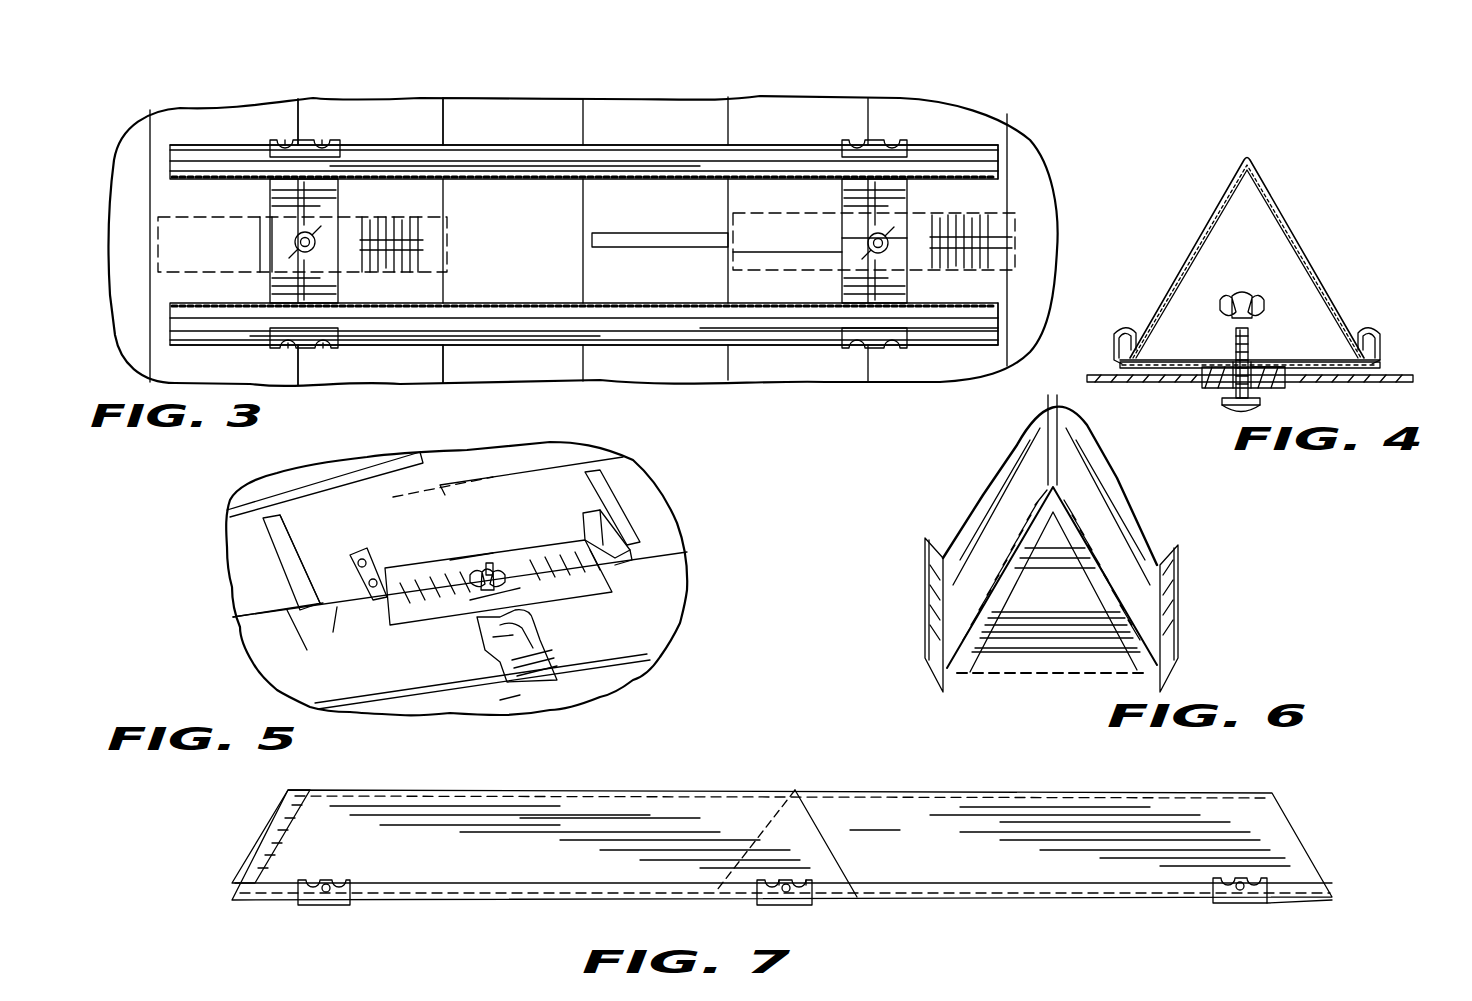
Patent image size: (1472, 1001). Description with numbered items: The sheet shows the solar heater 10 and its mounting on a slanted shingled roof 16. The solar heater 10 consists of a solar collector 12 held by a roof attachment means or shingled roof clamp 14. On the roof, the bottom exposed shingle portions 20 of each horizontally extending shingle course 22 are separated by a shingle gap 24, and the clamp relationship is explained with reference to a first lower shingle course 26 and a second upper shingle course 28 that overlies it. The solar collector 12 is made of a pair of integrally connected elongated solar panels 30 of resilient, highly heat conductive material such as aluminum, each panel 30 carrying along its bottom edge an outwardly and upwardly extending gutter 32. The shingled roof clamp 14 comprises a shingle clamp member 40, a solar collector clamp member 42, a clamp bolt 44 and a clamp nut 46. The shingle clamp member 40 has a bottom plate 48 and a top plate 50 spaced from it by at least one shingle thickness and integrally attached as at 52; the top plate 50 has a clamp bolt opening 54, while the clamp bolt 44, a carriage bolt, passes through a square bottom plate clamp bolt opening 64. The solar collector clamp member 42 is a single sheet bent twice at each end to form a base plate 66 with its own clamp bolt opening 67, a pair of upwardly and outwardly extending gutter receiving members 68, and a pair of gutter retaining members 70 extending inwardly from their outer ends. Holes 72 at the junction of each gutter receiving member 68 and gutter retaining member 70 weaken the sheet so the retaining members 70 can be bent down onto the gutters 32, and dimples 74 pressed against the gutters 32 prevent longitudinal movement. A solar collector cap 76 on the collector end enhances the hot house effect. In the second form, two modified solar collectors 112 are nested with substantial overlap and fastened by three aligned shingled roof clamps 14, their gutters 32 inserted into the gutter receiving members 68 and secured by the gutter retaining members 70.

In FIG. 3, the solar heater 10 is at (702, 392).
In FIG. 3, the solar collector 12 is at (1008, 314).
In FIG. 6, the solar collector 12 is at (1025, 492).
In FIG. 3, the shingled roof clamp 14 is at (268, 142).
In FIG. 4, the shingled roof clamp 14 is at (1385, 343).
In FIG. 5, the shingled roof clamp 14 is at (612, 590).
In FIG. 3, the shingled roof 16 is at (545, 370).
In FIG. 5, the shingled roof 16 is at (243, 492).
In FIG. 3, the bottom exposed shingle portions 20 is at (650, 372).
In FIG. 5, the bottom exposed shingle portions 20 is at (335, 608).
In FIG. 3, the shingle course 22 is at (460, 360).
In FIG. 5, the shingle course 22 is at (225, 545).
In FIG. 3, the shingle gap 24 is at (617, 242).
In FIG. 5, the shingle gap 24 is at (415, 466).
In FIG. 3, the first lower shingle course 26 is at (420, 134).
In FIG. 4, the first lower shingle course 26 is at (1320, 384).
In FIG. 5, the first lower shingle course 26 is at (238, 650).
In FIG. 3, the second upper shingle course 28 is at (288, 125).
In FIG. 5, the second upper shingle course 28 is at (228, 603).
In FIG. 3, the solar panel 30 is at (990, 168).
In FIG. 4, the solar panel 30 is at (1220, 200).
In FIG. 6, the solar panel 30 is at (985, 518).
In FIG. 7, the solar panel 30 is at (698, 790).
In FIG. 3, the gutter 32 is at (970, 146).
In FIG. 4, the gutter 32 is at (1140, 345).
In FIG. 6, the gutter 32 is at (925, 598).
In FIG. 7, the gutter 32 is at (560, 890).
In FIG. 3, the shingle clamp member 40 is at (447, 225).
In FIG. 5, the shingle clamp member 40 is at (572, 680).
In FIG. 3, the solar collector clamp member 42 is at (320, 290).
In FIG. 4, the solar collector clamp member 42 is at (1152, 362).
In FIG. 5, the solar collector clamp member 42 is at (612, 575).
In FIG. 3, the clamp bolt 44 is at (591, 242).
In FIG. 4, the clamp bolt 44 is at (1249, 345).
In FIG. 5, the clamp bolt 44 is at (492, 562).
In FIG. 4, the clamp nut 46 is at (1236, 292).
In FIG. 5, the clamp nut 46 is at (500, 570).
In FIG. 3, the bottom plate 48 is at (780, 262).
In FIG. 4, the bottom plate 48 is at (1280, 388).
In FIG. 5, the bottom plate 48 is at (500, 495).
In FIG. 3, the top plate 50 is at (838, 240).
In FIG. 4, the top plate 50 is at (1285, 368).
In FIG. 5, the top plate 50 is at (467, 562).
In FIG. 5, the integral attachment 52 is at (512, 700).
In FIG. 4, the clamp bolt opening 54 is at (1233, 368).
In FIG. 4, the square bottom plate clamp bolt opening 64 is at (1230, 398).
In FIG. 5, the solar collector clamp base plate 66 is at (430, 610).
In FIG. 4, the clamp bolt opening 67 is at (1250, 358).
In FIG. 4, the solar panel gutter receiving member 68 is at (1120, 364).
In FIG. 5, the solar panel gutter receiving member 68 is at (640, 548).
In FIG. 7, the solar panel gutter receiving member 68 is at (1265, 900).
In FIG. 3, the solar panel gutter retaining member 70 is at (305, 148).
In FIG. 4, the solar panel gutter retaining member 70 is at (1120, 330).
In FIG. 3, the holes 72 is at (330, 148).
In FIG. 5, the holes 72 is at (352, 565).
In FIG. 7, the holes 72 is at (800, 880).
In FIG. 7, the dimples 74 is at (326, 893).
In FIG. 6, the solar collector cap 76 is at (1060, 660).
In FIG. 7, the solar collector cap 76 is at (260, 834).
In FIG. 7, the modified solar collector 112 is at (470, 858).